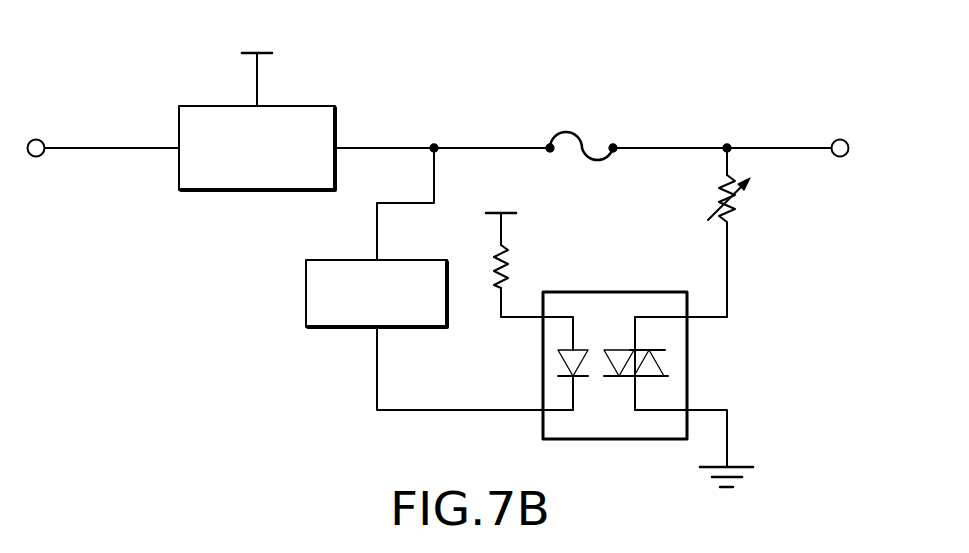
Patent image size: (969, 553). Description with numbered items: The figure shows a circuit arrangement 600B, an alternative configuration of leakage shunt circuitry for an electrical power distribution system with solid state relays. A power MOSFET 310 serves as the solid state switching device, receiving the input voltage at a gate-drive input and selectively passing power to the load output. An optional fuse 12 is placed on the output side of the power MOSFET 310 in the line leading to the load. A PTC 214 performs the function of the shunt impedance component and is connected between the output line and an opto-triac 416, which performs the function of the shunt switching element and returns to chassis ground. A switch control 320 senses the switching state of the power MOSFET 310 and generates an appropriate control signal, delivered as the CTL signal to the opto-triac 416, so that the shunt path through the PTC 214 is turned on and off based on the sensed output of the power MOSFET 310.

The circuit arrangement 600B is at (138, 45).
The power MOSFET 310 is at (192, 190).
The switch control 320 is at (306, 298).
The fuse 12 is at (582, 146).
The PTC 214 is at (738, 206).
The opto-triac 416 is at (615, 292).